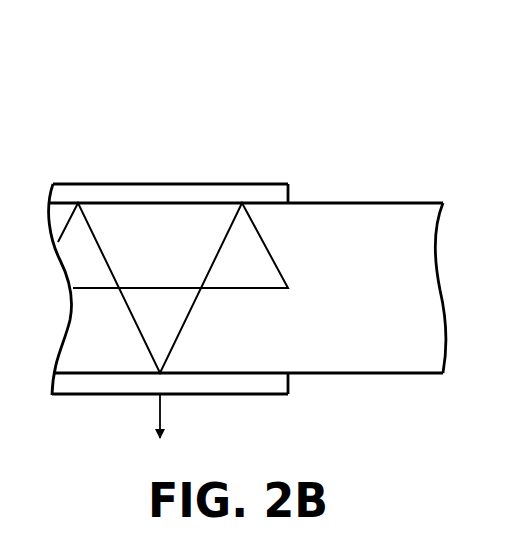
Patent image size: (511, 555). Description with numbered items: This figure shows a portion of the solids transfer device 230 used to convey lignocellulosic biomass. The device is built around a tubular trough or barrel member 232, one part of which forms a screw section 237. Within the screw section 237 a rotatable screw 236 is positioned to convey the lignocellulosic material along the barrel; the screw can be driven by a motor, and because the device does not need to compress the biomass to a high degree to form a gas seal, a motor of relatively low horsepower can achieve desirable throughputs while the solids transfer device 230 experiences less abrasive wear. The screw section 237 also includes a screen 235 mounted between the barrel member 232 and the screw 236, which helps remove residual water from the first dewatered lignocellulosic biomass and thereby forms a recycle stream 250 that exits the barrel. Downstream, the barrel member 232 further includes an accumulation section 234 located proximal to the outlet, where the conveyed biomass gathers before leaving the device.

The solids transfer device 230 is at (333, 85).
The barrel member 232 is at (236, 182).
The accumulation section 234 is at (405, 203).
The screen 235 is at (272, 203).
The rotatable screw 236 is at (97, 241).
The screw section 237 is at (180, 201).
The recycle stream 250 is at (165, 400).